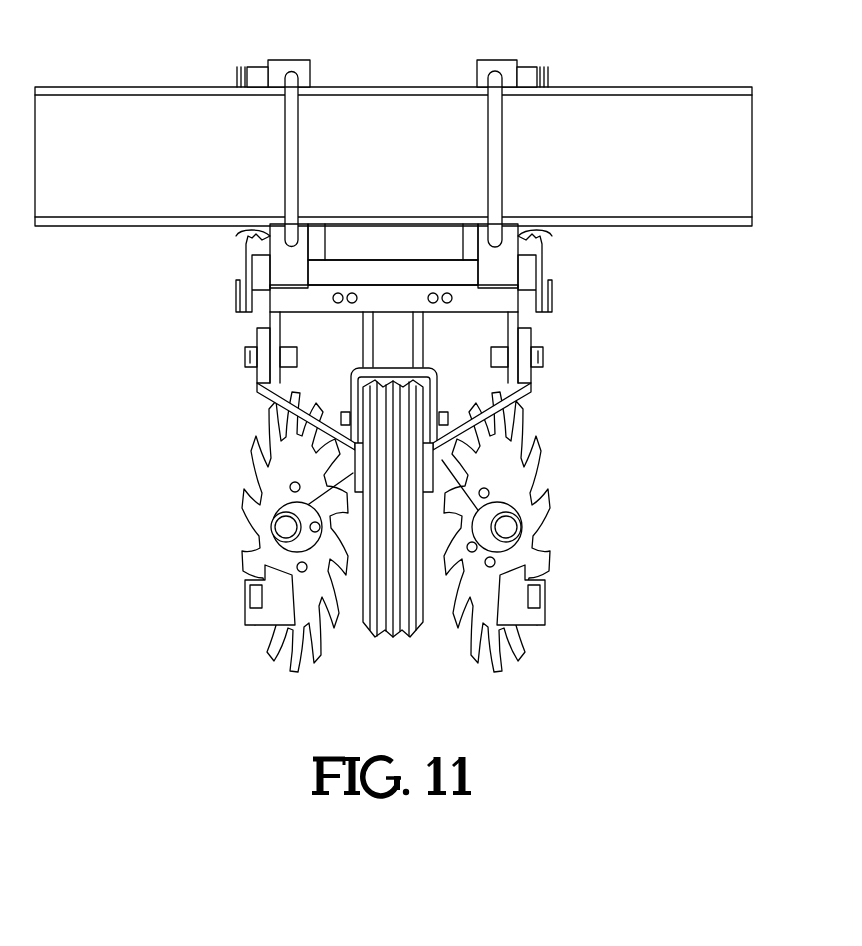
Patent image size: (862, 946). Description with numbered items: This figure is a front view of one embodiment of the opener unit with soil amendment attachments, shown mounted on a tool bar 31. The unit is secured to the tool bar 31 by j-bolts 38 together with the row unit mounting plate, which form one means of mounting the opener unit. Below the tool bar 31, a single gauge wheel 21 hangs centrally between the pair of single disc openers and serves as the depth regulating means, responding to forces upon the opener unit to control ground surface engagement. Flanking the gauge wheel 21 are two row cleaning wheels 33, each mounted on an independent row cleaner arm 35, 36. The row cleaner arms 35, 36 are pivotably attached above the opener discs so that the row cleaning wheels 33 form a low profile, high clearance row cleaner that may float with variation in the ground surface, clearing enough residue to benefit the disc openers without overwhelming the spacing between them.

The tool bar 31 is at (752, 140).
The j-bolts 38 is at (292, 70).
The gauge wheel 21 is at (393, 637).
The row cleaning wheels 33 is at (282, 474).
The row cleaner arm 35 is at (500, 531).
The row cleaner arm 36 is at (272, 530).